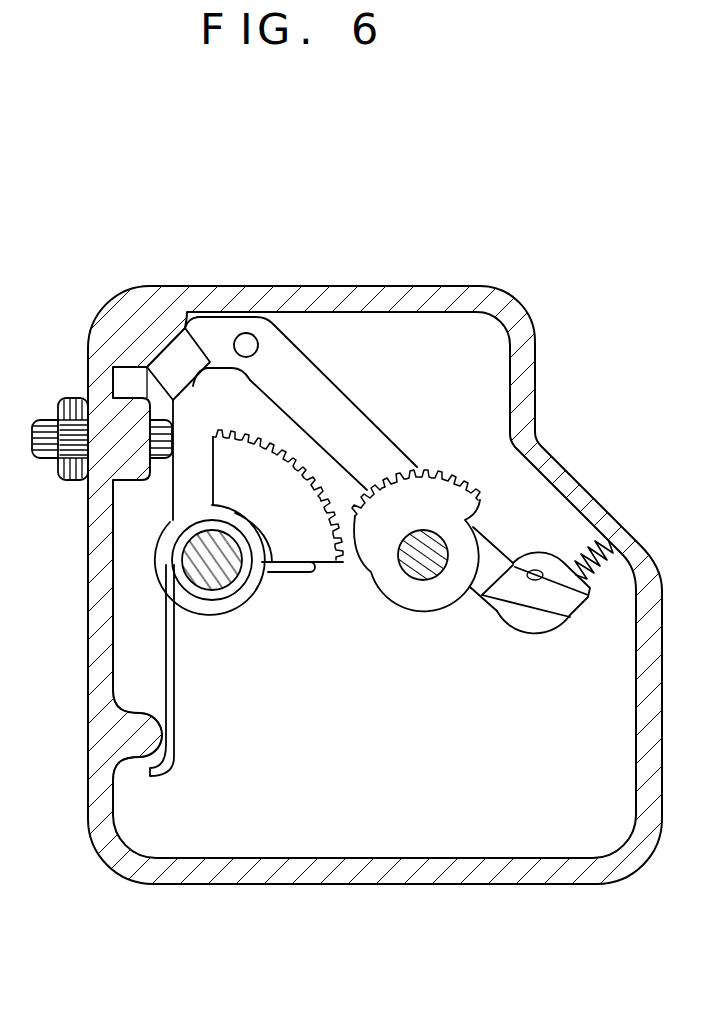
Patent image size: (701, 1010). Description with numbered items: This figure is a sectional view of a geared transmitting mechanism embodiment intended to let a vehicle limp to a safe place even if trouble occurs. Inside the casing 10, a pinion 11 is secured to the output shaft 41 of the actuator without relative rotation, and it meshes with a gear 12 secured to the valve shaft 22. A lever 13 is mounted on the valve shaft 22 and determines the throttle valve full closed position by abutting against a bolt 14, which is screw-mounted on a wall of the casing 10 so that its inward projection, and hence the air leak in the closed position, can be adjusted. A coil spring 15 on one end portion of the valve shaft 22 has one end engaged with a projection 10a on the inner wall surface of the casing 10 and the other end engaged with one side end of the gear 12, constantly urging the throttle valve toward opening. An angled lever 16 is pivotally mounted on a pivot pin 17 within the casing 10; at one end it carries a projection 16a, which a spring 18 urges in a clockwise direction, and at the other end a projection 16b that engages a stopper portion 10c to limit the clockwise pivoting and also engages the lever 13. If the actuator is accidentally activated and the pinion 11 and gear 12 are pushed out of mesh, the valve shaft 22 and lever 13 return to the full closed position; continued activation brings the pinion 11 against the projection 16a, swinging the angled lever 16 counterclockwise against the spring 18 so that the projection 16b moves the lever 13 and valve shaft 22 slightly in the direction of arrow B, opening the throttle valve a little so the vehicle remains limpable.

The casing 10 is at (167, 873).
The projection 10a is at (140, 737).
The stopper portion 10c is at (150, 340).
The pinion 11 is at (450, 490).
The gear 12 is at (310, 540).
The lever 13 is at (197, 385).
The bolt 14 is at (42, 420).
The coil spring 15 is at (182, 675).
The angled lever 16 is at (382, 428).
The projection 16a is at (516, 578).
The projection 16b is at (158, 366).
The pivot pin 17 is at (250, 343).
The spring 18 is at (604, 538).
The valve shaft 22 is at (228, 580).
The output shaft 41 is at (426, 575).